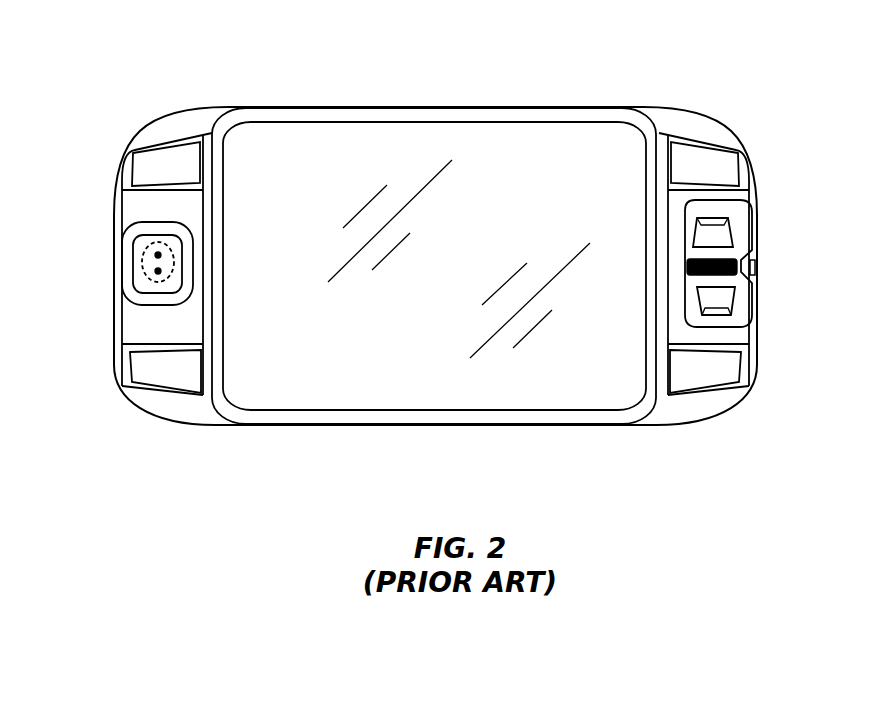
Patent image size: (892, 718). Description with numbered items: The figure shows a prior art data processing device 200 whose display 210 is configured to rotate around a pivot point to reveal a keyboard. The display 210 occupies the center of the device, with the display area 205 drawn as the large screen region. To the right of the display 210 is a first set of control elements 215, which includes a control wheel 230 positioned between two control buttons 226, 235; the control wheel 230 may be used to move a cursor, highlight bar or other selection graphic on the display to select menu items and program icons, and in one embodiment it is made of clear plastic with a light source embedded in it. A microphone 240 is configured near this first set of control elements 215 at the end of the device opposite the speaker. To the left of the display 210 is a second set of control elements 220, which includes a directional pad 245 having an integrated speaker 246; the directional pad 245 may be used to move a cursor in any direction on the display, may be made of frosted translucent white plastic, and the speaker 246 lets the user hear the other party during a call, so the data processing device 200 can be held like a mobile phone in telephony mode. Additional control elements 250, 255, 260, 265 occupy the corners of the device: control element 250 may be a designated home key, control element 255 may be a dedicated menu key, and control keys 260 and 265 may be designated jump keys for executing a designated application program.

The data processing device 200 is at (115, 30).
The display screen 205 is at (370, 388).
The display 210 is at (415, 116).
The first set of control elements 215 is at (772, 108).
The second set of control elements 220 is at (98, 112).
The control button 226 is at (715, 233).
The control wheel 230 is at (733, 272).
The control button 235 is at (713, 300).
The microphone 240 is at (754, 262).
The directional pad 245 is at (152, 271).
The speaker 246 is at (145, 245).
The control element 250 is at (705, 164).
The control element 255 is at (717, 381).
The control key 260 is at (179, 173).
The control key 265 is at (178, 376).